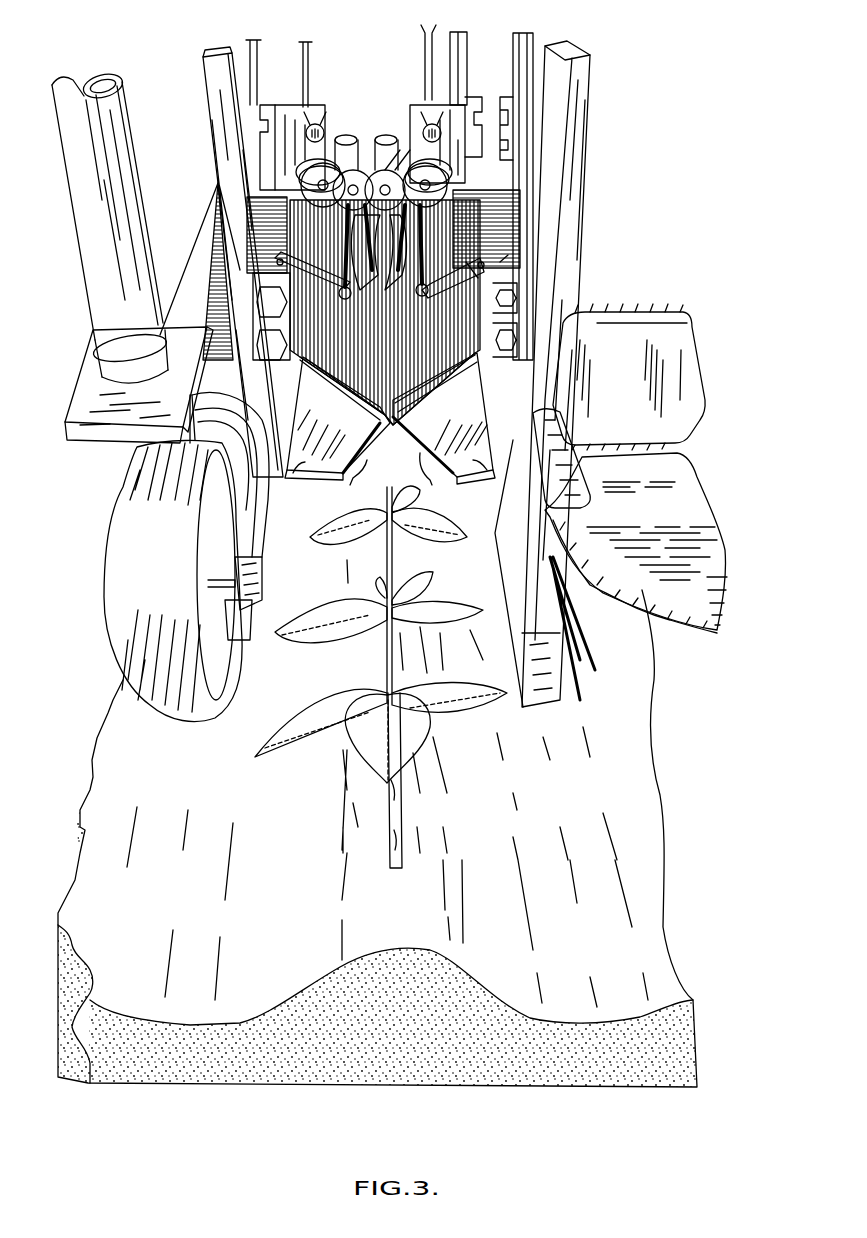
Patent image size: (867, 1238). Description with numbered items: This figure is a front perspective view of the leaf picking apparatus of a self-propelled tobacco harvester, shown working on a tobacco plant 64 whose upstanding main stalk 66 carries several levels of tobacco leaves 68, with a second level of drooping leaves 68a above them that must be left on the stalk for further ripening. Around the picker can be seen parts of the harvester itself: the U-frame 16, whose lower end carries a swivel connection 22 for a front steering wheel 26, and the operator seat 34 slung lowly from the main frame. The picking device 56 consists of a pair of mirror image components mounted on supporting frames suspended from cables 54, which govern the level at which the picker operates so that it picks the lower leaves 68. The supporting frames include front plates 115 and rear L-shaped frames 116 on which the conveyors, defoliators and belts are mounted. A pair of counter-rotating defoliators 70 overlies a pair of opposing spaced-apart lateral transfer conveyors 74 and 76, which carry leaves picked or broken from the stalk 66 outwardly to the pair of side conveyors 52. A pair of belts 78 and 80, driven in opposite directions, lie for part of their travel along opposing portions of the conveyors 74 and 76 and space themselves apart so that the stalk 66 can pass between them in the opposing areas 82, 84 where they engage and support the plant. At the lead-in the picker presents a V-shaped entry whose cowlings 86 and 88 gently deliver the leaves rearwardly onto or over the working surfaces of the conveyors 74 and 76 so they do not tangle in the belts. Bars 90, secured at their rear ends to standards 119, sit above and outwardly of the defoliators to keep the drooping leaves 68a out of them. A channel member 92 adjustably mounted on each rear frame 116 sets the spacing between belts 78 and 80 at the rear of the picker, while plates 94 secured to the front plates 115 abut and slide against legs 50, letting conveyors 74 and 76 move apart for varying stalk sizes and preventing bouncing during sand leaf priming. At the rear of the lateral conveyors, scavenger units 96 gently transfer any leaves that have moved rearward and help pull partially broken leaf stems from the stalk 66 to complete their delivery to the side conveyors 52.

The U-frame 16 is at (102, 212).
The swivel connection 22 is at (93, 343).
The front steering wheel 26 is at (148, 500).
The operator seat 34 is at (663, 512).
The legs 50 is at (262, 40).
The side conveyors 52 is at (207, 282).
The cables 54 is at (253, 70).
The picking device 56 is at (366, 82).
The tobacco plant 64 is at (476, 810).
The main stalk 66 is at (392, 800).
The tobacco leaves 68 is at (270, 730).
The second level drooping leaves 68a is at (307, 627).
The counter-rotating defoliators 70 is at (483, 233).
The lateral transfer conveyor 74 is at (318, 365).
The lateral transfer conveyor 76 is at (433, 380).
The belt 78 is at (350, 478).
The belt 80 is at (423, 460).
The opposing area 82 is at (353, 387).
The opposing area 84 is at (400, 390).
The cowling 86 is at (305, 463).
The cowling 88 is at (477, 460).
The bars 90 is at (390, 153).
The channel member 92 is at (270, 115).
The plates 94 is at (263, 300).
The scavenger units 96 is at (328, 124).
The front plates 115 is at (488, 290).
The rear L-shaped frame 116 is at (453, 117).
The standards 119 is at (405, 147).